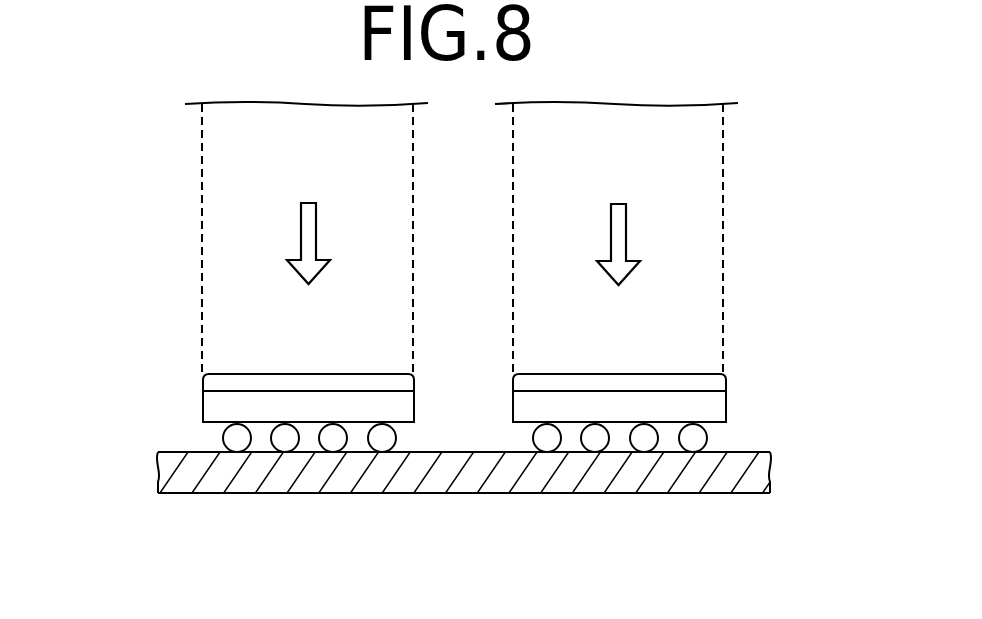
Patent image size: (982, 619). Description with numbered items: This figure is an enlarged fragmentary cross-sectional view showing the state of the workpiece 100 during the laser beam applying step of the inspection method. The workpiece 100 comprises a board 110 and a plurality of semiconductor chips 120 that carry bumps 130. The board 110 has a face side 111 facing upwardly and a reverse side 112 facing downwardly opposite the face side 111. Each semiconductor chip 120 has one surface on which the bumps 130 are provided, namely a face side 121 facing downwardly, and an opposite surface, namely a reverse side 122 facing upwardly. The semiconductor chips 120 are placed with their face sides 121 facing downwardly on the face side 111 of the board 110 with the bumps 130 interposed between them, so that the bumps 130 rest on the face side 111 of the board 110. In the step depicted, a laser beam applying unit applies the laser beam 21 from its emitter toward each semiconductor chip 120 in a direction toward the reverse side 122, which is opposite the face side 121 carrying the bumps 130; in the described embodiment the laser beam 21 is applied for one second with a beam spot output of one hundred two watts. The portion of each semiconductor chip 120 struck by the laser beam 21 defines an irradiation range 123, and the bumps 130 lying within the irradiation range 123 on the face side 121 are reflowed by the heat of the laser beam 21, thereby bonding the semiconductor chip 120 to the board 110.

The laser beam 21 is at (413, 203).
The workpiece 100 is at (98, 338).
The board 110 is at (474, 448).
The face side 111 is at (443, 452).
The reverse side 112 is at (430, 493).
The semiconductor chip 120 is at (468, 381).
The face side 121 is at (514, 426).
The reverse side 122 is at (693, 391).
The irradiation range 123 is at (326, 372).
The bump 130 is at (693, 438).